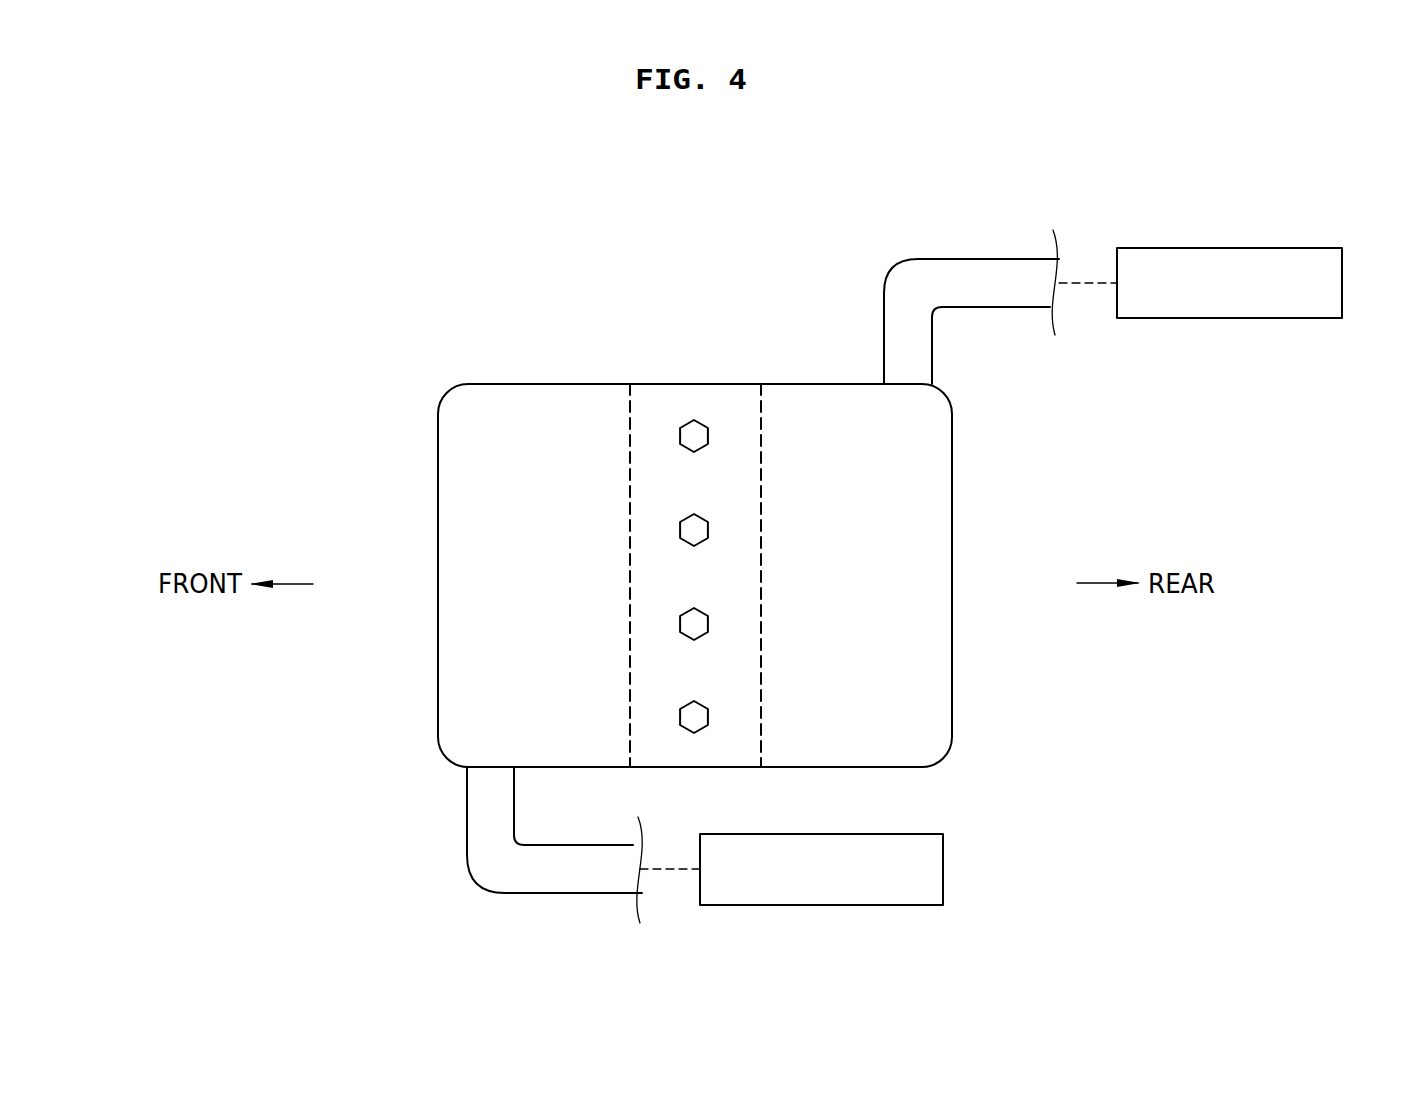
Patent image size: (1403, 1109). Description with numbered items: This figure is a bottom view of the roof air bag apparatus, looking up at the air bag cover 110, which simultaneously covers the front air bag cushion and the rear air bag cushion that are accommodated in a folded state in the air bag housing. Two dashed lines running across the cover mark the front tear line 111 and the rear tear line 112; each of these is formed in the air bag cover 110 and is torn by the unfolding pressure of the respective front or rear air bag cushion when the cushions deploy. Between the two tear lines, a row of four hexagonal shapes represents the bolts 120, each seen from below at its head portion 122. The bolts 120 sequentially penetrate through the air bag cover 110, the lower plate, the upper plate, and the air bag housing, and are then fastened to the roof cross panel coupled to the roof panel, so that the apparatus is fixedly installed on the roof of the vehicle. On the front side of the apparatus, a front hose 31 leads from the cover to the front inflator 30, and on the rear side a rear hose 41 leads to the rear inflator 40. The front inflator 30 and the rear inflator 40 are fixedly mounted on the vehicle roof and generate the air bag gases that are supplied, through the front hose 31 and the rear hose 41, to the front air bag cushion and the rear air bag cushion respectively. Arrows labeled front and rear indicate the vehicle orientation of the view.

The air bag cover 110 is at (453, 496).
The front tear line 111 is at (630, 462).
The rear tear line 112 is at (761, 462).
The bolt 120 is at (888, 562).
The head portion 122 is at (694, 432).
The front inflator 30 is at (943, 870).
The front hose 31 is at (512, 895).
The rear inflator 40 is at (1230, 248).
The rear hose 41 is at (977, 272).